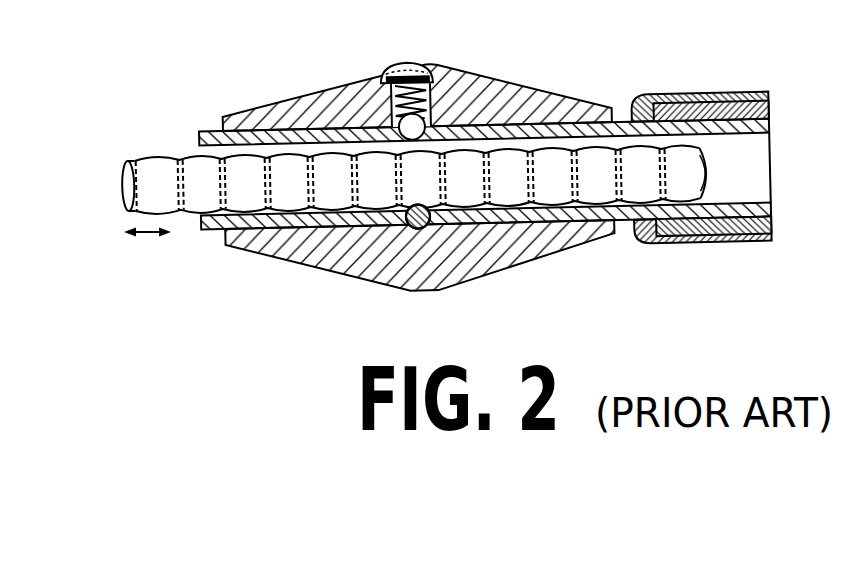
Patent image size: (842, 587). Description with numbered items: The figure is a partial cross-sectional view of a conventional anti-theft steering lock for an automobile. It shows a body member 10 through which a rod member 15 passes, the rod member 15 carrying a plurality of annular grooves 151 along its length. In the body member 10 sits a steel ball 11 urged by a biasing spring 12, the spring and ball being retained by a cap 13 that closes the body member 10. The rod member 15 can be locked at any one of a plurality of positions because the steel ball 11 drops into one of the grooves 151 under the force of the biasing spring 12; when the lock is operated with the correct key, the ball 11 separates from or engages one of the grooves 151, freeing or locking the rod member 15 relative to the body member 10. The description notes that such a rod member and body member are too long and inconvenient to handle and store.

The body member 10 is at (553, 104).
The steel ball 11 is at (401, 117).
The biasing spring 12 is at (388, 83).
The cap 13 is at (421, 63).
The rod member 15 is at (555, 183).
The annular grooves 151 is at (452, 207).